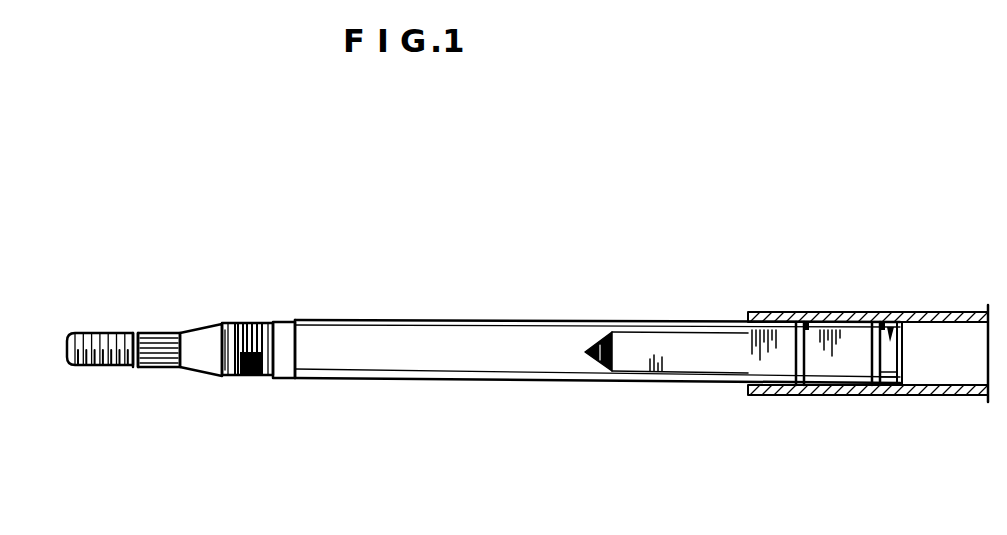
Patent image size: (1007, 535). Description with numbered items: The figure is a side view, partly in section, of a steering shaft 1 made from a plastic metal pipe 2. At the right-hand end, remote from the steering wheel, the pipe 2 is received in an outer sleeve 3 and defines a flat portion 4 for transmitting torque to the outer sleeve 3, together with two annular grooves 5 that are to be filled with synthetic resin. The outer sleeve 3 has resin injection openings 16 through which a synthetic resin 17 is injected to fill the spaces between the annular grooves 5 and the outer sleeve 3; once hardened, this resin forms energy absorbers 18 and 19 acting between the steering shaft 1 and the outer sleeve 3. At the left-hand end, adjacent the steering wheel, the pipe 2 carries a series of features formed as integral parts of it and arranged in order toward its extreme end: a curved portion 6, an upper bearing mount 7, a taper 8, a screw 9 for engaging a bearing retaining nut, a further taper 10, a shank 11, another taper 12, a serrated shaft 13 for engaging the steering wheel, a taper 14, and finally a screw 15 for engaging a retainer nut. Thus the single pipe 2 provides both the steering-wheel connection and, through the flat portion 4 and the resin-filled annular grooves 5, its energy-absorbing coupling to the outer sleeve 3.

The steering shaft 1 is at (426, 298).
The plastic metal pipe 2 is at (501, 333).
The outer sleeve 3 is at (935, 312).
The flat portion 4 is at (722, 366).
The annular grooves 5 is at (802, 348).
The curved portion 6 is at (290, 380).
The upper bearing mount 7 is at (288, 328).
The taper 8 is at (265, 378).
The screw 9 is at (257, 326).
The taper 10 is at (232, 374).
The shank 11 is at (232, 327).
The taper 12 is at (203, 365).
The serrated shaft 13 is at (167, 332).
The taper 14 is at (132, 367).
The screw 15 is at (110, 332).
The resin injection openings 16 is at (800, 313).
The synthetic resin 17 is at (803, 313).
The energy absorber 18 is at (800, 416).
The energy absorber 19 is at (876, 416).